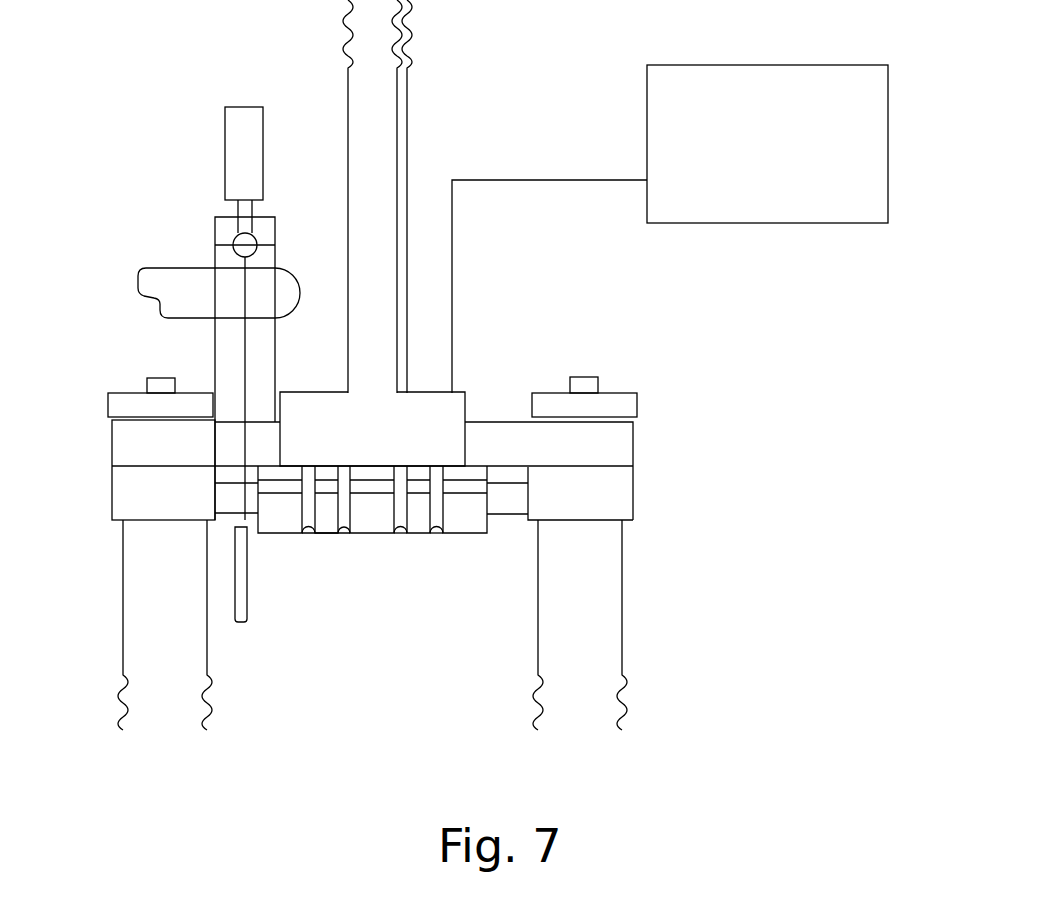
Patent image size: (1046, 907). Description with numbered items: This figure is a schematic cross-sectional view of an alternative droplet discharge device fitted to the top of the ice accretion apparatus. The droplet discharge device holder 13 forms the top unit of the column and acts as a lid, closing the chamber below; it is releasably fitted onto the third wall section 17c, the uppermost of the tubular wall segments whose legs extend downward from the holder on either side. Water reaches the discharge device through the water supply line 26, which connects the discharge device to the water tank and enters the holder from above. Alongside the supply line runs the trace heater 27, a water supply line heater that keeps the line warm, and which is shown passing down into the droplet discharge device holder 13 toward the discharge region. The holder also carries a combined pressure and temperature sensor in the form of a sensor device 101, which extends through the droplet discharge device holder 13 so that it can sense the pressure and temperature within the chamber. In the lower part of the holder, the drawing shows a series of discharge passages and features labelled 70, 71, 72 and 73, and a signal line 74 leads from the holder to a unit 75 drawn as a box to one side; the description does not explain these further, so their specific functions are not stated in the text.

The droplet discharge device holder 13 is at (485, 432).
The third wall section 17c is at (622, 600).
The water supply line 26 is at (360, 120).
The trace heater 27 is at (402, 145).
The pin 70 is at (282, 562).
The first slot 71 is at (345, 500).
The second slot 72 is at (400, 535).
The third slot 73 is at (460, 523).
The signal line 74 is at (528, 180).
The controller 75 is at (788, 158).
The sensor device 101 is at (215, 355).